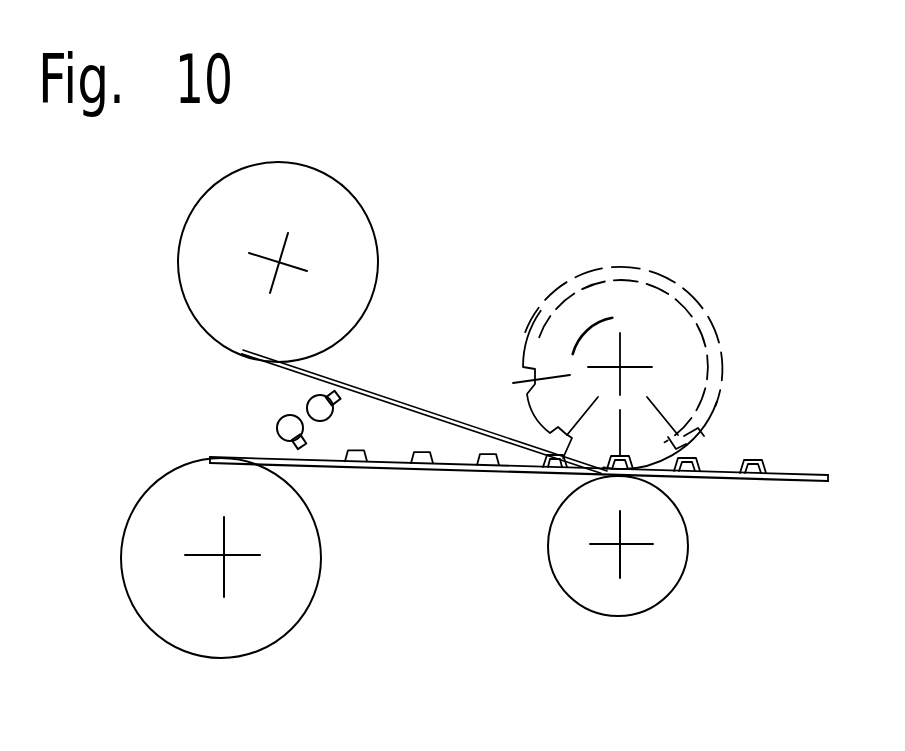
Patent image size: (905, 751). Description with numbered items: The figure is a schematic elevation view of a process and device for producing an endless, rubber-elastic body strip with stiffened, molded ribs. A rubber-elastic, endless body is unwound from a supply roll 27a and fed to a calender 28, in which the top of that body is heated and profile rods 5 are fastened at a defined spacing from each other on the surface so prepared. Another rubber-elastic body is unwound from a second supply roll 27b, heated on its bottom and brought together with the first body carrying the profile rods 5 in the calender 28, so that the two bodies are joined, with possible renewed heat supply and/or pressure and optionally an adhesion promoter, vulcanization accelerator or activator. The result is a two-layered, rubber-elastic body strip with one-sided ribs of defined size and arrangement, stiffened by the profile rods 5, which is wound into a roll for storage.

The second supply roll 27b is at (342, 237).
The supply roll 27a is at (225, 490).
The calender 28 is at (672, 343).
The profile rods 5 is at (488, 468).